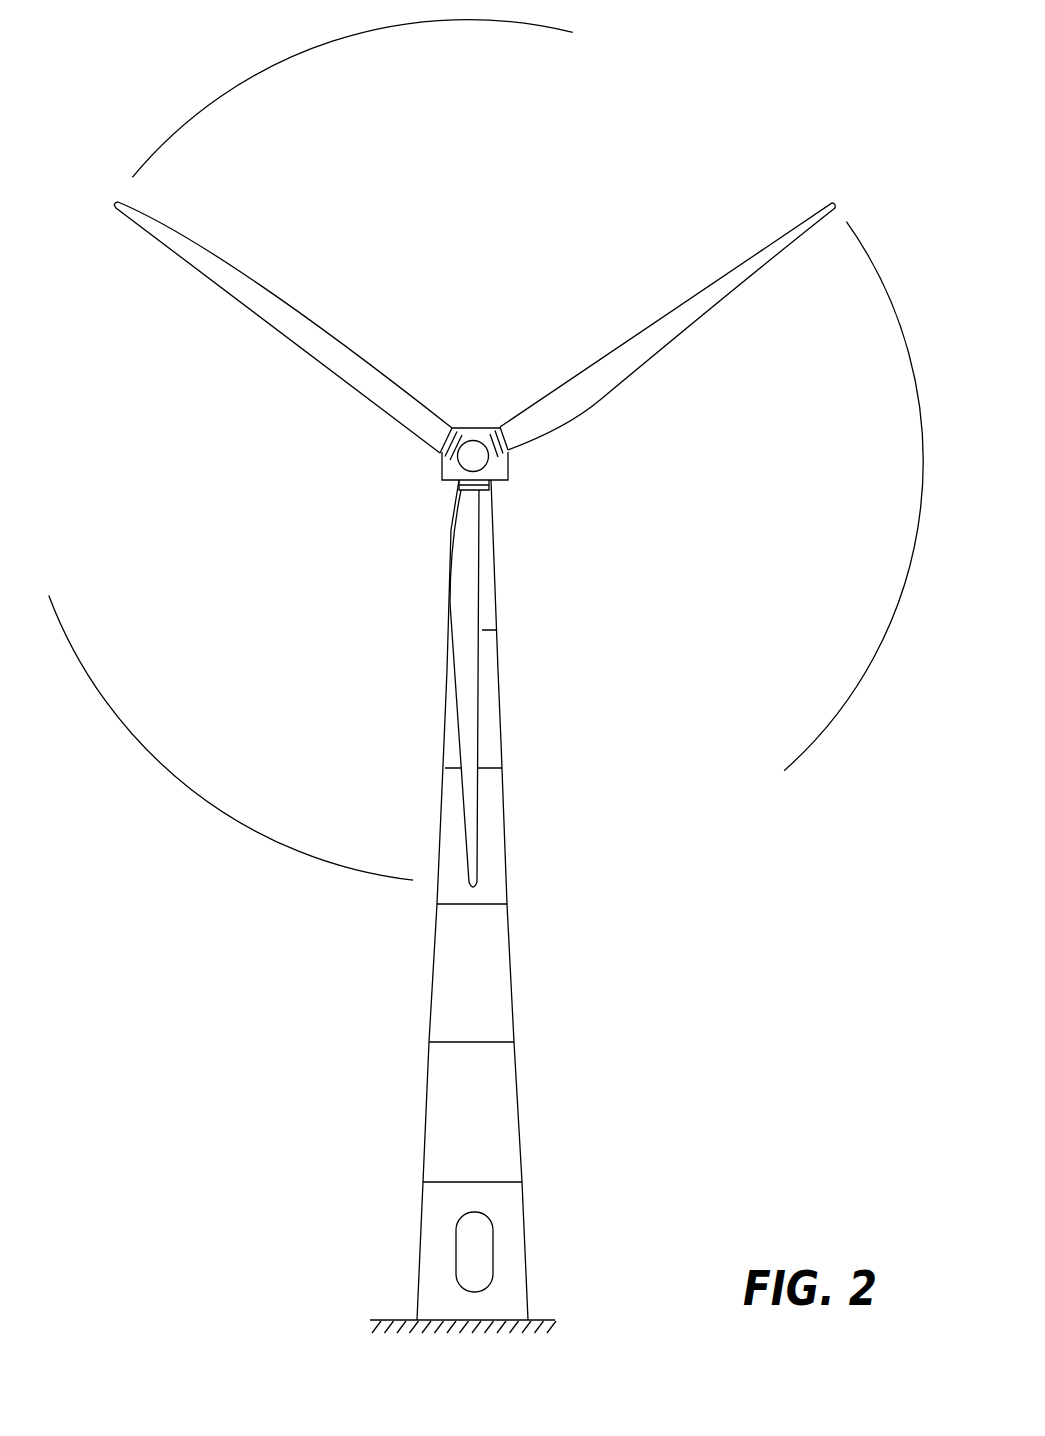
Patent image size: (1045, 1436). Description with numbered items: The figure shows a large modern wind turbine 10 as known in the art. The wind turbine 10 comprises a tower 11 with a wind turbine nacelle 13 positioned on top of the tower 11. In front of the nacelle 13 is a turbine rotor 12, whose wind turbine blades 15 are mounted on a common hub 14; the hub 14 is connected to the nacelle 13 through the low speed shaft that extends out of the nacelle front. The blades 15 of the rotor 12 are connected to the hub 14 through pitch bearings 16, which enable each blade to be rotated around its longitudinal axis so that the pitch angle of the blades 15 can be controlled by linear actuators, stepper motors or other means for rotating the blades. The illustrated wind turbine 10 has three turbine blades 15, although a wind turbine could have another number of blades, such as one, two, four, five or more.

The wind turbine 10 is at (449, 906).
The tower 11 is at (503, 988).
The turbine rotor 12 is at (474, 544).
The wind turbine nacelle 13 is at (508, 481).
The hub 14 is at (473, 454).
The wind turbine blades 15 is at (473, 728).
The pitch bearings 16 is at (500, 427).